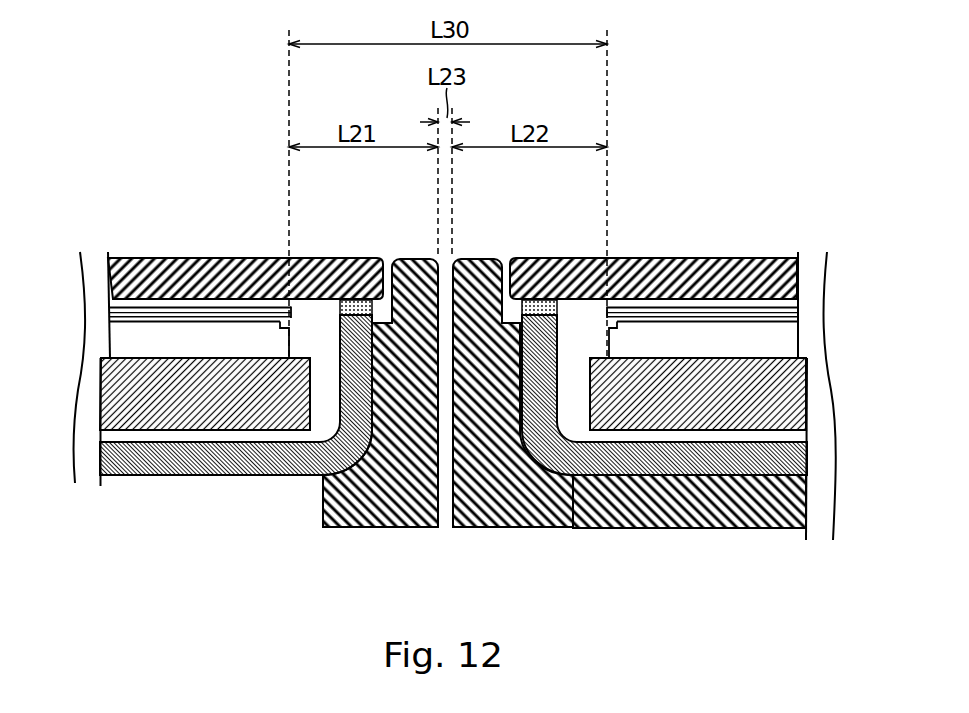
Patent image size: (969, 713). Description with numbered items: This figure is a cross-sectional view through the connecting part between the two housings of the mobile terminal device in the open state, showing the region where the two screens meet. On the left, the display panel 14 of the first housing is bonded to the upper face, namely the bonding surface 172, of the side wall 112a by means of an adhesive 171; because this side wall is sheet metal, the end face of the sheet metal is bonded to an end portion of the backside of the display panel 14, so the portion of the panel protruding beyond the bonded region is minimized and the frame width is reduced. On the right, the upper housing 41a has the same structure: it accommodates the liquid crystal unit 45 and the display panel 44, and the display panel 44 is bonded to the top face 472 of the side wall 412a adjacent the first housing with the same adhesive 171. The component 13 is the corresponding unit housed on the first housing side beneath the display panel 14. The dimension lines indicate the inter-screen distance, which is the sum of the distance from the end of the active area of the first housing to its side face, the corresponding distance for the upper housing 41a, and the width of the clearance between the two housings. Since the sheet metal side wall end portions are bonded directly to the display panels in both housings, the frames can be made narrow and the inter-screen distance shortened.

The display panel 14 is at (143, 258).
The display panel 44 is at (718, 258).
The first electronic component 13 is at (100, 392).
The liquid crystal unit 45 is at (803, 393).
The upper housing 41a is at (800, 502).
The adhesive 171 is at (377, 257).
The bonding surface 172 is at (349, 257).
The top face 472 is at (552, 257).
The side wall 112a is at (338, 330).
The side wall 412a is at (557, 338).